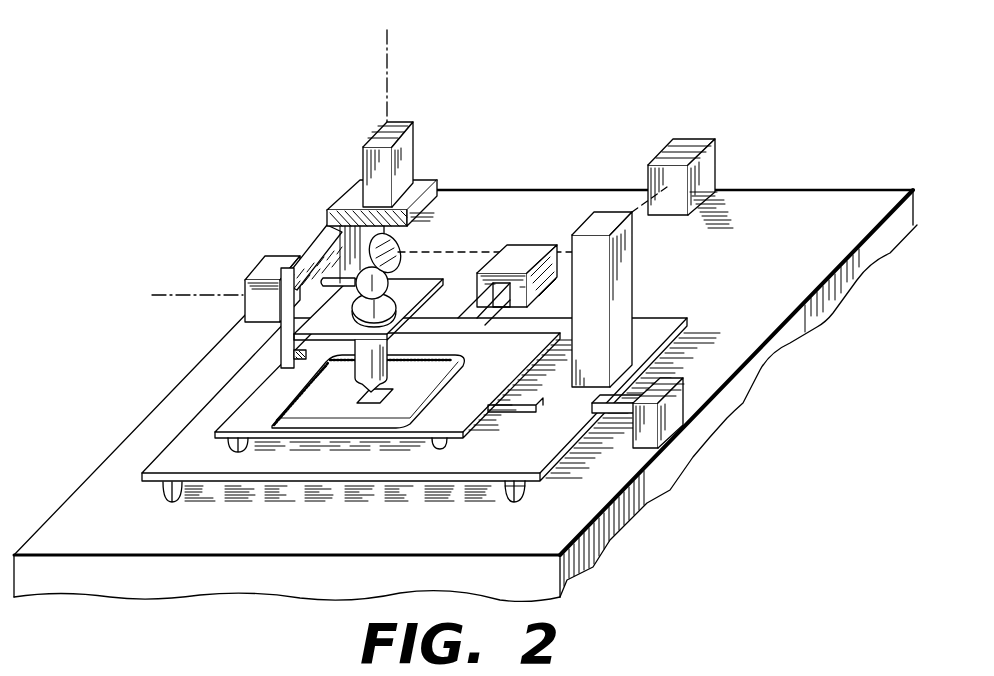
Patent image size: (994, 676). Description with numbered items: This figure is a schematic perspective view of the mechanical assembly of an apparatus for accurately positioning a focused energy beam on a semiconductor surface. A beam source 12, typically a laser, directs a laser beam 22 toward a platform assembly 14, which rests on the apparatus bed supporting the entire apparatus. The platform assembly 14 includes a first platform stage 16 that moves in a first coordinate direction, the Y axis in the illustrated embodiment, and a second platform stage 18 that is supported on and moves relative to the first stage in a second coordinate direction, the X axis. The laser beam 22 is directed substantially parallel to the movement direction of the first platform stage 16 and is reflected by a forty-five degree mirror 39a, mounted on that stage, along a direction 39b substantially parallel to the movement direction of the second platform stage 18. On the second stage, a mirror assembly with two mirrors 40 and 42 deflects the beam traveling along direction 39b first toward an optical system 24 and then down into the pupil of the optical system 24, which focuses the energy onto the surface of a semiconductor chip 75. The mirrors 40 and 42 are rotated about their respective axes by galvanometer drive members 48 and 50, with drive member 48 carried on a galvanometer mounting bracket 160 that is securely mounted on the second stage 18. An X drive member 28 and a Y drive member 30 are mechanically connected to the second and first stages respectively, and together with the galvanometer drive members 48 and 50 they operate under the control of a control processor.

The beam source 12 is at (707, 172).
The platform assembly 14 is at (163, 439).
The first platform stage 16 is at (320, 478).
The second platform stage 18 is at (257, 398).
The laser beam 22 is at (633, 213).
The optical system 24 is at (348, 290).
The X drive member 28 is at (678, 398).
The Y drive member 30 is at (545, 226).
The 45° mirror 39a is at (622, 284).
The reflected beam direction 39b is at (442, 251).
The first mirror 40 is at (396, 246).
The second mirror 42 is at (390, 285).
The galvanometer drive member 48 is at (407, 153).
The galvanometer drive member 50 is at (271, 308).
The semiconductor chip 75 is at (358, 395).
The galvanometer mounting bracket 160 is at (284, 328).